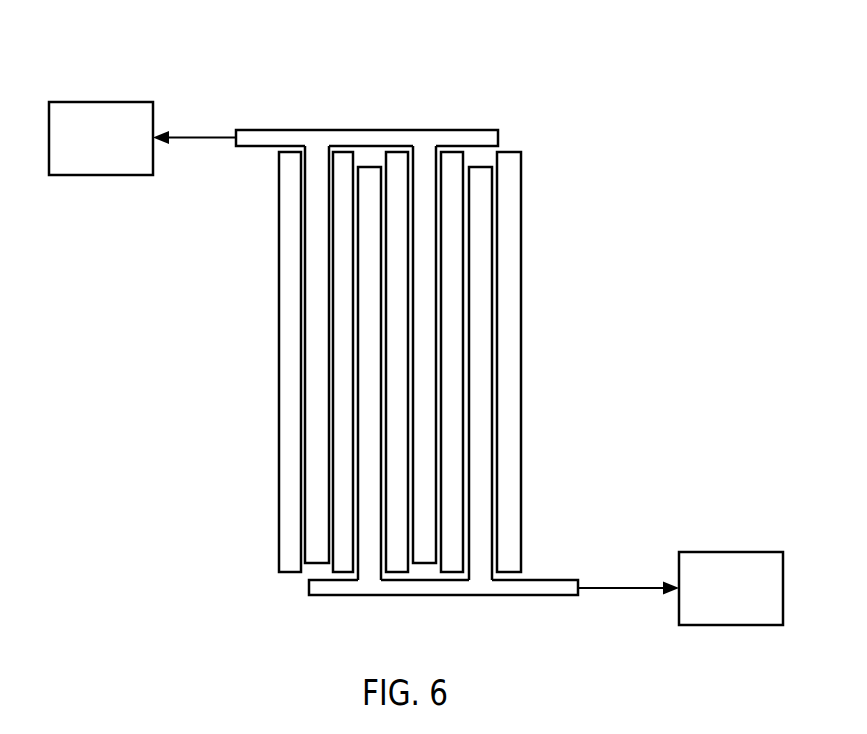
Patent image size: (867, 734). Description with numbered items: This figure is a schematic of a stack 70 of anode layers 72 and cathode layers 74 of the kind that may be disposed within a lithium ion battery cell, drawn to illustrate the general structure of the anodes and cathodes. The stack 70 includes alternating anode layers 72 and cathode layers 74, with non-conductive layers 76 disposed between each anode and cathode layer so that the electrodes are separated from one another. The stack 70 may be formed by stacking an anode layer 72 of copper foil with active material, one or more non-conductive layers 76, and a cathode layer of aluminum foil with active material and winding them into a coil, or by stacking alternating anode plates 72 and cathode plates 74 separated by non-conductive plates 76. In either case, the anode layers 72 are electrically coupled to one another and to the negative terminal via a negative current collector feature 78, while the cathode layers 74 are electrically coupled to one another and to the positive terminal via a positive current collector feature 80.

The stack 70 is at (196, 42).
The anode layers 72 is at (308, 565).
The cathode layers 74 is at (375, 168).
The non-conductive layers 76 is at (333, 152).
The negative current collector feature 78 is at (247, 130).
The positive current collector feature 80 is at (568, 580).